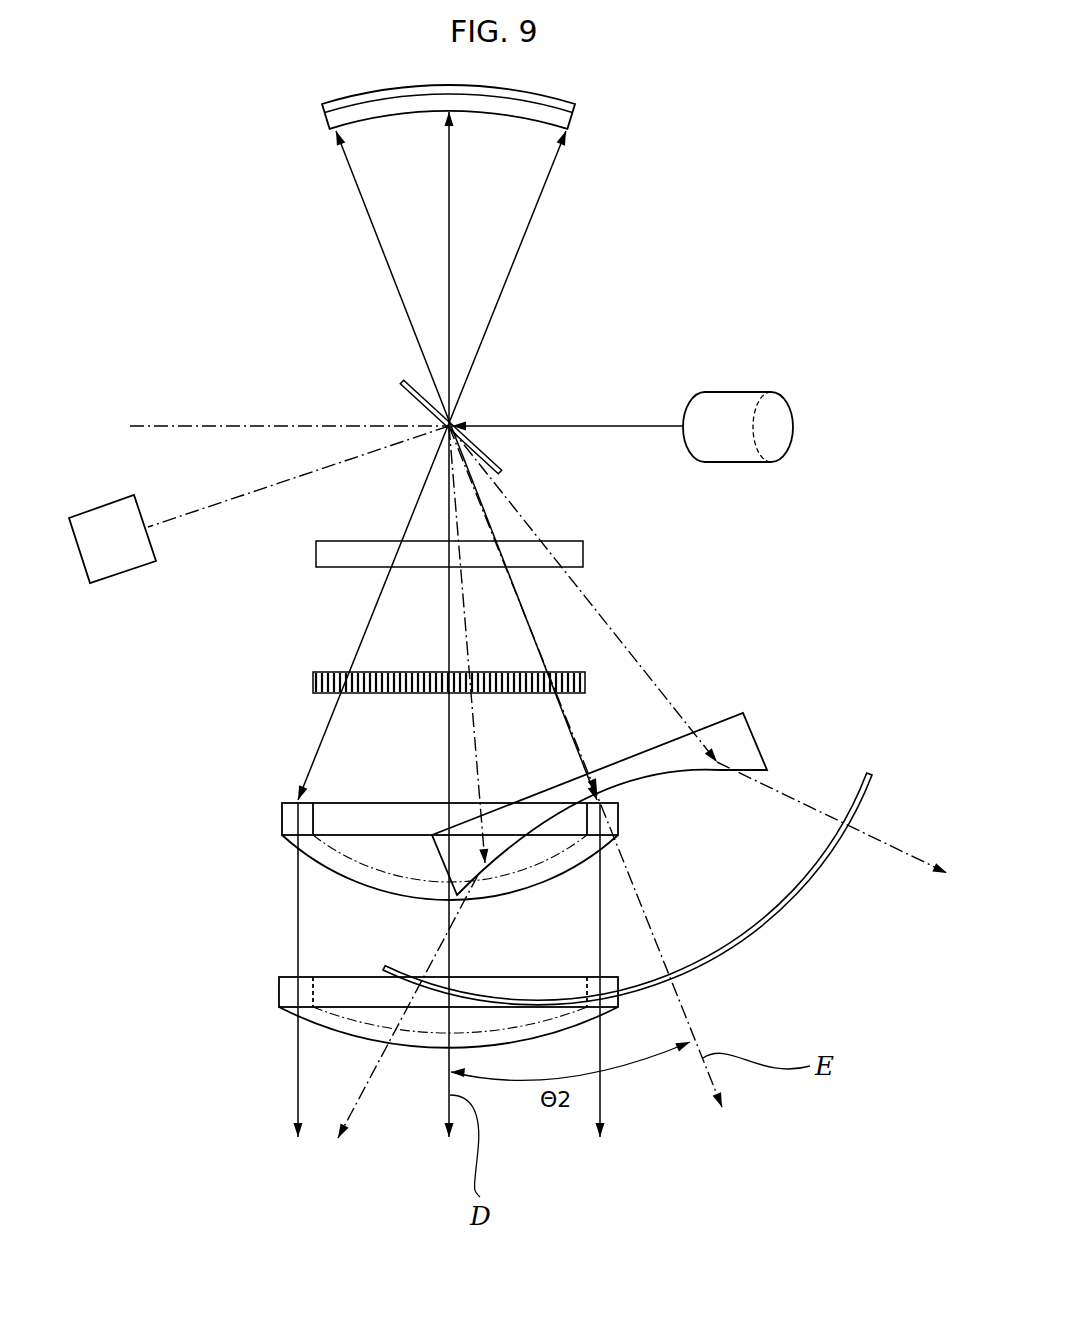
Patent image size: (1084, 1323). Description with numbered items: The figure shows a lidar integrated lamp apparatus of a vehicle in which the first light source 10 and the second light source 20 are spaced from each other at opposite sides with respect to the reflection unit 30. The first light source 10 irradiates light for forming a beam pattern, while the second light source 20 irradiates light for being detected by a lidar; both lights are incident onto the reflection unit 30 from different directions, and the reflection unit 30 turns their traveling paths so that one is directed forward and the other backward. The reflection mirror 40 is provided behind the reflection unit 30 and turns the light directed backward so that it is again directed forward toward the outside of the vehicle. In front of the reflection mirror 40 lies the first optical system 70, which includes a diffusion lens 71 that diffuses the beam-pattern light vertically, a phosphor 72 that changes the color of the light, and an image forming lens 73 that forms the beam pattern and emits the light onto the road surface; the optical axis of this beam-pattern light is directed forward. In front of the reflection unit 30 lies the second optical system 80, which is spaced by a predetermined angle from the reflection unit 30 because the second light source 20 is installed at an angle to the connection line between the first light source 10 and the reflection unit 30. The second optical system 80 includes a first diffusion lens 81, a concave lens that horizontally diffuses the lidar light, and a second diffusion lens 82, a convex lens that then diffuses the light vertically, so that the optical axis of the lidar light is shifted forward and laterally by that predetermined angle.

The first light source 10 is at (741, 397).
The second light source 20 is at (105, 510).
The reflection unit 30 is at (410, 386).
The reflection mirror 40 is at (576, 118).
The first optical system 70 is at (210, 596).
The diffusion lens 71 is at (318, 553).
The phosphor 72 is at (313, 682).
The image forming lens 73 is at (292, 820).
The second optical system 80 is at (897, 660).
The first diffusion lens 81 is at (742, 728).
The second diffusion lens 82 is at (872, 773).